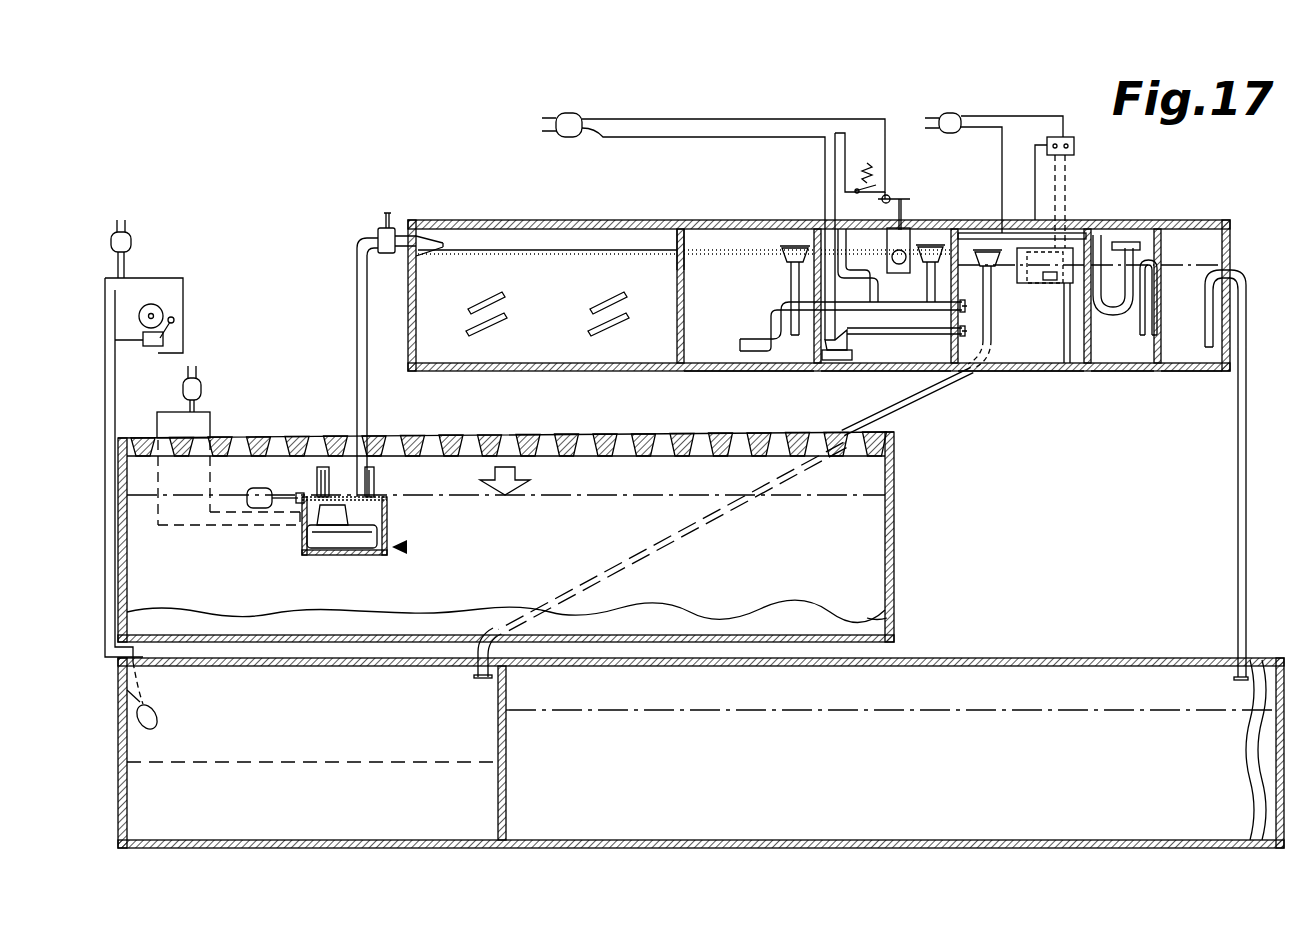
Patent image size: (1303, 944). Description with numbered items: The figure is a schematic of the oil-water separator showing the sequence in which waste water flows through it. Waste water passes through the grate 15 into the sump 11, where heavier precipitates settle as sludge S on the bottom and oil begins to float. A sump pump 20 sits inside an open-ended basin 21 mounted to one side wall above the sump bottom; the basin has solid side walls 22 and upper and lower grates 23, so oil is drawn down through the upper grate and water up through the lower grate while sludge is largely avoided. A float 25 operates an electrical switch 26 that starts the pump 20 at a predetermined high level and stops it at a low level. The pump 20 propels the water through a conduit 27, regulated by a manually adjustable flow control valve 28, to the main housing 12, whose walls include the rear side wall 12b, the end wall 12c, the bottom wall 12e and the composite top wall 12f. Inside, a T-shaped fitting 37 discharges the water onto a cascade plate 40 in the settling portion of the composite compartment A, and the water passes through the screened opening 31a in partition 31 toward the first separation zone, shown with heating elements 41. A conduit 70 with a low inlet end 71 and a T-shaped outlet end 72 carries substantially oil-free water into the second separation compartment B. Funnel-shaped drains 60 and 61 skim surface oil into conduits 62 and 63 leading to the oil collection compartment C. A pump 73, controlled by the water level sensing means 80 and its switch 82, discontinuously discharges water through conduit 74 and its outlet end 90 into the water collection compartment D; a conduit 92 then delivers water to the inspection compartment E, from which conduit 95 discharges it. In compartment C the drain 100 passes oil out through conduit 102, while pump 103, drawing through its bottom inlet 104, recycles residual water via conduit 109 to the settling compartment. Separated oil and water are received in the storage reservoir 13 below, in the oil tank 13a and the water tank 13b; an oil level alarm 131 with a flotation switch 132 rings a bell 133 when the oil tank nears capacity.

The sump 11 is at (893, 510).
The main separator housing 12 is at (1218, 210).
The rear side wall 12b is at (1229, 252).
The end wall 12c is at (410, 296).
The bottom wall 12e is at (738, 371).
The composite top wall 12f is at (1188, 216).
The storage reservoir means 13 is at (1093, 650).
The oil tank 13a is at (352, 750).
The water tank 13b is at (900, 703).
The grate 15 is at (563, 443).
The sump pump 20 is at (322, 532).
The basin 21 is at (407, 547).
The side walls 22 is at (387, 518).
The grates 23 is at (372, 496).
The float 25 is at (247, 500).
The electrical switch 26 is at (300, 497).
The conduit 27 is at (357, 284).
The flow control valve 28 is at (383, 228).
The partition 31 is at (677, 338).
The screened opening 31a is at (677, 266).
The T-shaped pipe fitting 37 is at (429, 212).
The cascade plate 40 is at (426, 240).
The heating elements 41 is at (468, 323).
The first drain 60 is at (783, 258).
The second drain 61 is at (935, 242).
The conduit 62 is at (914, 329).
The conduit 63 is at (967, 316).
The conduit 70 is at (771, 306).
The inlet end 71 is at (740, 349).
The outlet end 72 is at (838, 212).
The pump 73 is at (847, 371).
The conduit 74 is at (968, 232).
The water level sensing means 80 is at (908, 216).
The switch 82 is at (867, 166).
The outlet end 90 is at (1132, 233).
The conduit 92 is at (1145, 302).
The conduit 95 is at (1238, 577).
The drain 100 is at (1010, 272).
The conduit 102 is at (906, 404).
The pump 103 is at (1050, 290).
The inlet 104 is at (1056, 358).
The conduit 109 is at (694, 232).
The oil level alarm 131 is at (186, 303).
The flotation switch 132 is at (158, 697).
The bell 133 is at (151, 304).
The composite water settling and separation compartment A is at (571, 238).
The second oil-water separation compartment B is at (897, 360).
The oil collection compartment C is at (1033, 354).
The water collection compartment D is at (1123, 354).
The water inspection compartment E is at (1190, 353).
The sludge S is at (893, 619).